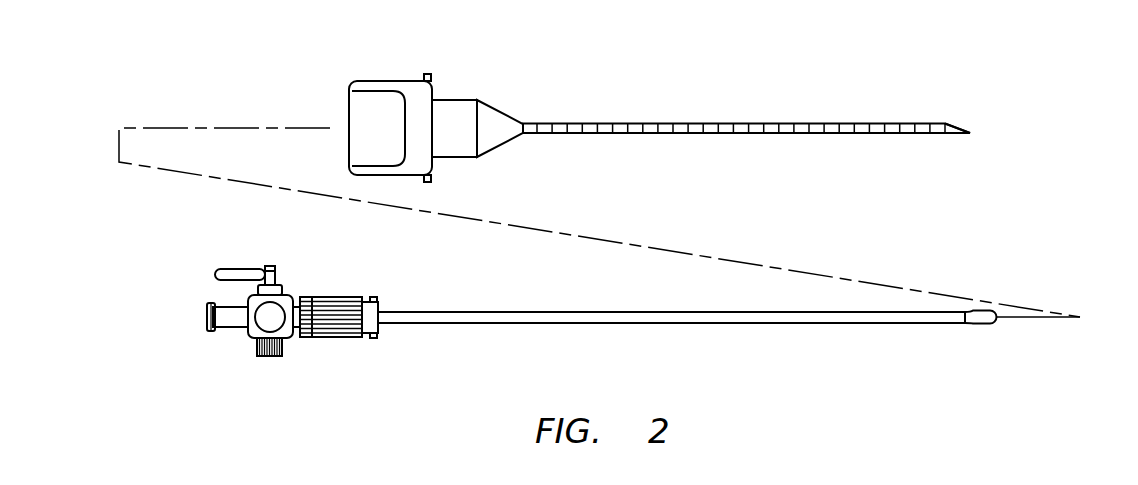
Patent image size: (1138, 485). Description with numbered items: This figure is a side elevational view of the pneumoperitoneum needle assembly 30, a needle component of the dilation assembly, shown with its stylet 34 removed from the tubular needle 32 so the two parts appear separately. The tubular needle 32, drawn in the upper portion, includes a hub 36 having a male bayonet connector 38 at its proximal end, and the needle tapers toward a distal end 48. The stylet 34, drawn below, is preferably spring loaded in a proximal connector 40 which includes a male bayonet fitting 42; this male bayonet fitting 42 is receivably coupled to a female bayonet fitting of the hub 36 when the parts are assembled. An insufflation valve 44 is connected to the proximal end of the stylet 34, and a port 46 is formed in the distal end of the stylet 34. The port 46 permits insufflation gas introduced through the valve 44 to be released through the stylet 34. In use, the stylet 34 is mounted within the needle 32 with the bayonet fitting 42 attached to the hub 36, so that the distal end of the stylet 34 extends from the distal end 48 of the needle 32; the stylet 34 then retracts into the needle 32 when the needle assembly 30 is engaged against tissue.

The pneumoperitoneum needle assembly 30 is at (687, 106).
The tubular needle 32 is at (788, 134).
The stylet 34 is at (750, 324).
The hub 36 is at (455, 99).
The male bayonet connector 38 is at (428, 73).
The proximal connector 40 is at (335, 338).
The male bayonet fitting 42 is at (372, 297).
The insufflation valve 44 is at (250, 334).
The port 46 is at (967, 324).
The distal end 48 is at (962, 125).